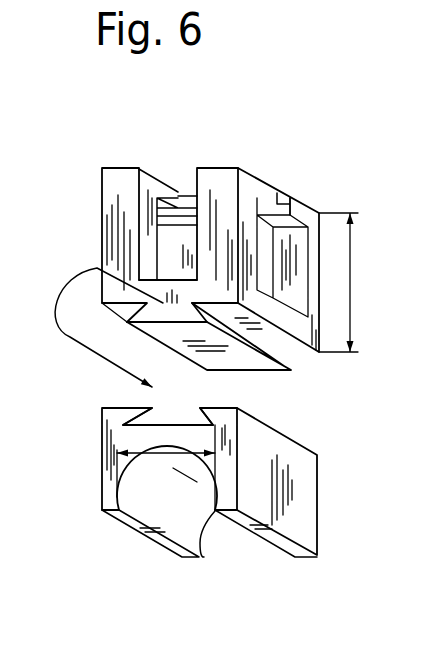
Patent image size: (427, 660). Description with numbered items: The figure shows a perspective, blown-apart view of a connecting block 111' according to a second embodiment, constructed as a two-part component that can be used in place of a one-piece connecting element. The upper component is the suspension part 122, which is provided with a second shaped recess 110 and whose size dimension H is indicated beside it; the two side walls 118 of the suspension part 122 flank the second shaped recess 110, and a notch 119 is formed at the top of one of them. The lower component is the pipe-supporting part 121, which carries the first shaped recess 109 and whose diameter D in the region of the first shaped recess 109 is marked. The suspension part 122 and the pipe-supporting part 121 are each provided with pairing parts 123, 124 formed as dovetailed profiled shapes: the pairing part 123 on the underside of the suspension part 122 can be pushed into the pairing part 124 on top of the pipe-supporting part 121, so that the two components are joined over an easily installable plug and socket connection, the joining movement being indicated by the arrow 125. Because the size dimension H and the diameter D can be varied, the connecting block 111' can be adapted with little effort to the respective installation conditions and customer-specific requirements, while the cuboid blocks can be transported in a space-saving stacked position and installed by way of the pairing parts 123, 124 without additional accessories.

The connecting block 111' is at (171, 223).
The side walls 118 is at (122, 187).
The second shaped recess 110 is at (178, 250).
The notch 119 is at (280, 199).
The suspension part 122 is at (110, 243).
The pairing part 123 is at (256, 366).
The pairing part 124 is at (183, 412).
The arrow 125 is at (74, 342).
The pipe-supporting part 121 is at (107, 472).
The first shaped recess 109 is at (225, 543).
The size dimension H is at (351, 296).
The diameter D is at (168, 453).